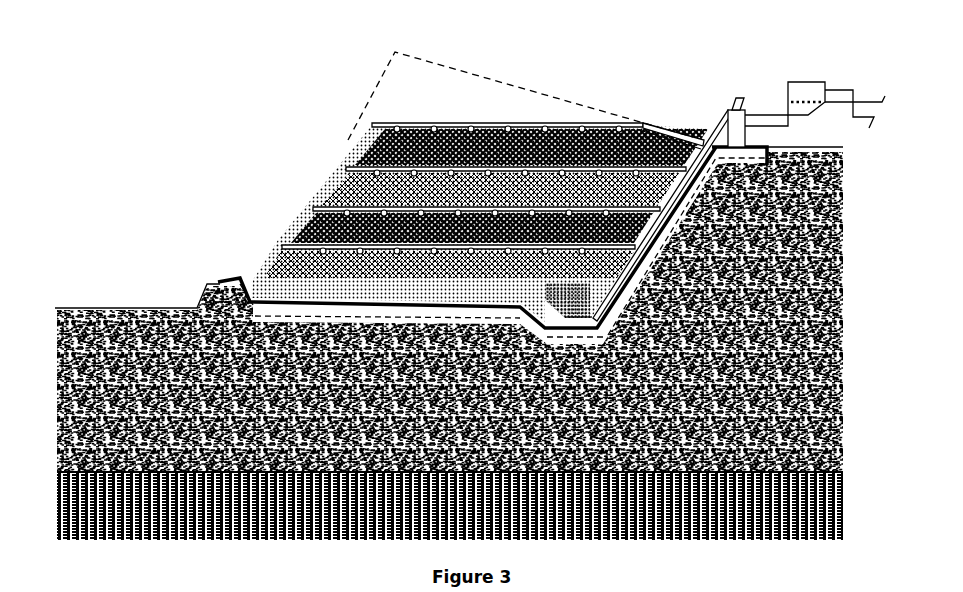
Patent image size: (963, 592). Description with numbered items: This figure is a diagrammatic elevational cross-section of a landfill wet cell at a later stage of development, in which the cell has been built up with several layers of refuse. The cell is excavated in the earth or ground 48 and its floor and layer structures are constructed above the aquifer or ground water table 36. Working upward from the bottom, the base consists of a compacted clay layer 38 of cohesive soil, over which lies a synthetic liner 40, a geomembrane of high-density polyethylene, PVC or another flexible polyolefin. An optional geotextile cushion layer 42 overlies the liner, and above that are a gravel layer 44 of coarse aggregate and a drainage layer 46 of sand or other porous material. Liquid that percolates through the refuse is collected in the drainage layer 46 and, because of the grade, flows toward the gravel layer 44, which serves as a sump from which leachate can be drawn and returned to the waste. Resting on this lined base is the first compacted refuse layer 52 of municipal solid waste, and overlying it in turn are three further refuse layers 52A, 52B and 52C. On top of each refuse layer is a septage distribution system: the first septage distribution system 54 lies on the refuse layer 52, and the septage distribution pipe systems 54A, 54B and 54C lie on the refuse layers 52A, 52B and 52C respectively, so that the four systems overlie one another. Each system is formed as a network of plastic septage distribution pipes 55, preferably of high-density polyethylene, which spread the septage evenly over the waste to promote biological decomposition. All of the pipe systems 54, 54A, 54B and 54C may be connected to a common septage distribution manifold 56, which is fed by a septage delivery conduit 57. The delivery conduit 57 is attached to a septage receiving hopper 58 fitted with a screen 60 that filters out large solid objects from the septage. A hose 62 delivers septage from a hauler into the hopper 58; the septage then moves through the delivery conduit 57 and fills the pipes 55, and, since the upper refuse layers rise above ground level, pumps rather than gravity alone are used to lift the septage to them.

The ground water table 36 is at (155, 470).
The compacted clay layer 38 is at (308, 318).
The synthetic liner 40 is at (434, 309).
The geotextile cushion layer 42 is at (430, 297).
The gravel layer 44 is at (582, 292).
The drainage layer 46 is at (492, 287).
The earth or ground 48 is at (165, 305).
The compacted refuse layer 52 is at (480, 223).
The refuse layer 52A is at (472, 228).
The refuse layer 52B is at (500, 189).
The refuse layer 52C is at (531, 147).
The septage distribution system 54 is at (300, 235).
The septage distribution pipe system 54A is at (325, 197).
The septage distribution pipe system 54B is at (350, 158).
The septage distribution pipe system 54C is at (373, 122).
The septage distribution pipes 55 is at (655, 124).
The septage distribution manifold 56 is at (726, 107).
The septage delivery conduit 57 is at (699, 138).
The septage receiving hopper 58 is at (824, 83).
The screen 60 is at (811, 98).
The hose 62 is at (862, 95).